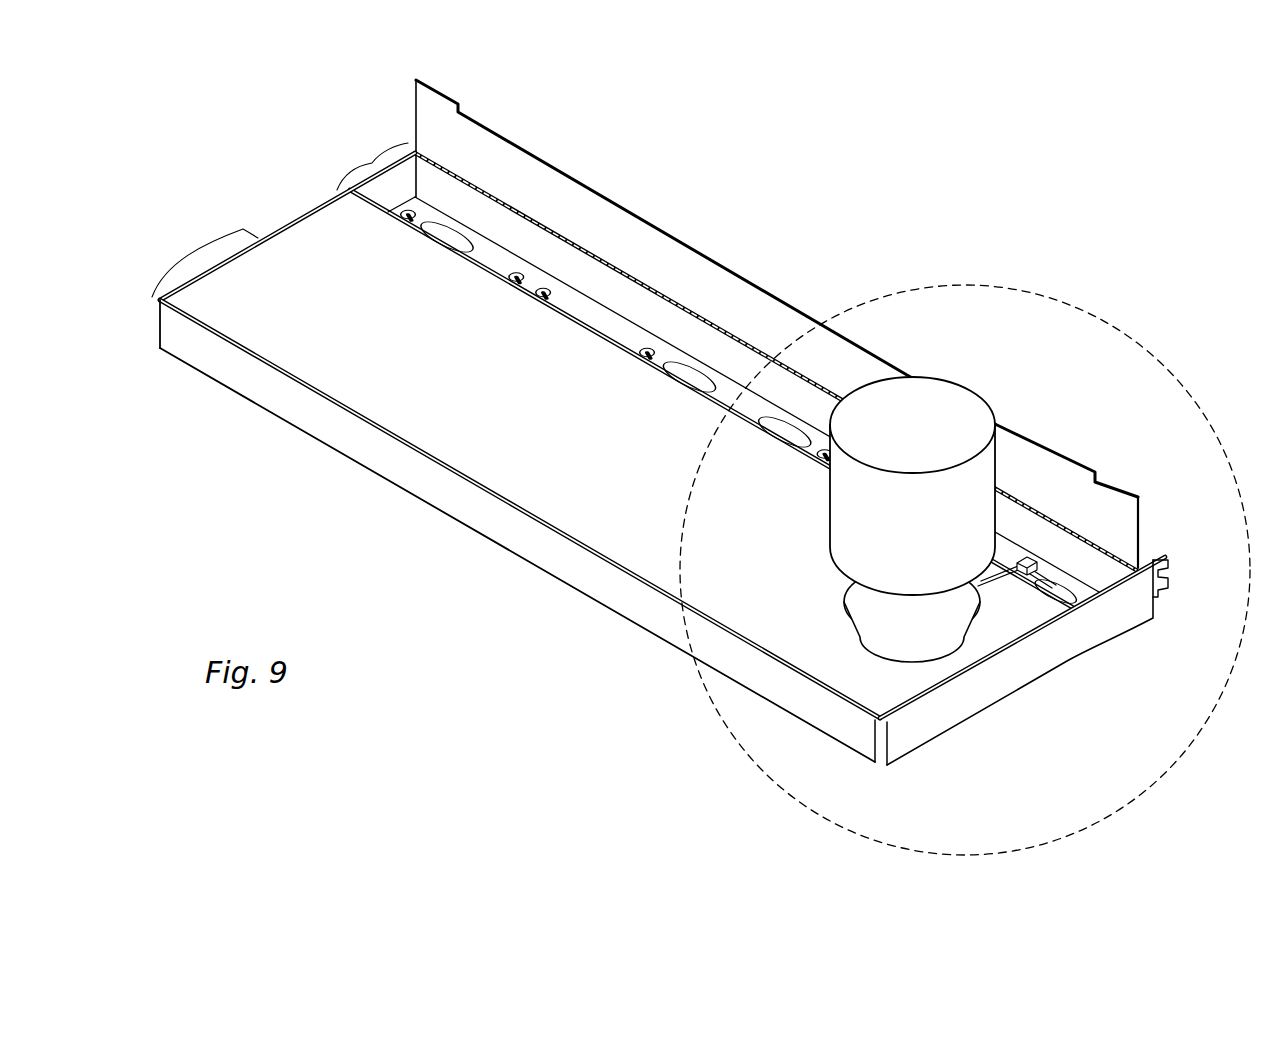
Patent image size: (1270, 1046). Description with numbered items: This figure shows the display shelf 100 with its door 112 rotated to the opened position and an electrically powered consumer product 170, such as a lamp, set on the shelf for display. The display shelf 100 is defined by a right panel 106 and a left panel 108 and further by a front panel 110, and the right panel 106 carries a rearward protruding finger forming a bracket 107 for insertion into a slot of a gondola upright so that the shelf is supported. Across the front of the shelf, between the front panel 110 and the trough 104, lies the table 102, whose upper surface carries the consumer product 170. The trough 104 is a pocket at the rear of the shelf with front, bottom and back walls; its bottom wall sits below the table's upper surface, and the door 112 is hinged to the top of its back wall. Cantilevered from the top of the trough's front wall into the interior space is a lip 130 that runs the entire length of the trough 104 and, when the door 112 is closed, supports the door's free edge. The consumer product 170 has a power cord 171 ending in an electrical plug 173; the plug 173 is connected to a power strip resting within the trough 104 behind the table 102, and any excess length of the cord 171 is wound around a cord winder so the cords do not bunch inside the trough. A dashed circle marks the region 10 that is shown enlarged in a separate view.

The display shelf 100 is at (690, 95).
The table 102 is at (205, 245).
The trough 104 is at (372, 164).
The right panel 106 is at (1002, 680).
The bracket 107 is at (1192, 567).
The left panel 108 is at (398, 185).
The front panel 110 is at (512, 528).
The door 112 is at (1160, 533).
The lip 130 is at (583, 325).
The electrically powered consumer product 170 is at (852, 630).
The power cord 171 is at (999, 585).
The electrical plug 173 is at (1033, 560).
The detail region 10 is at (1103, 312).